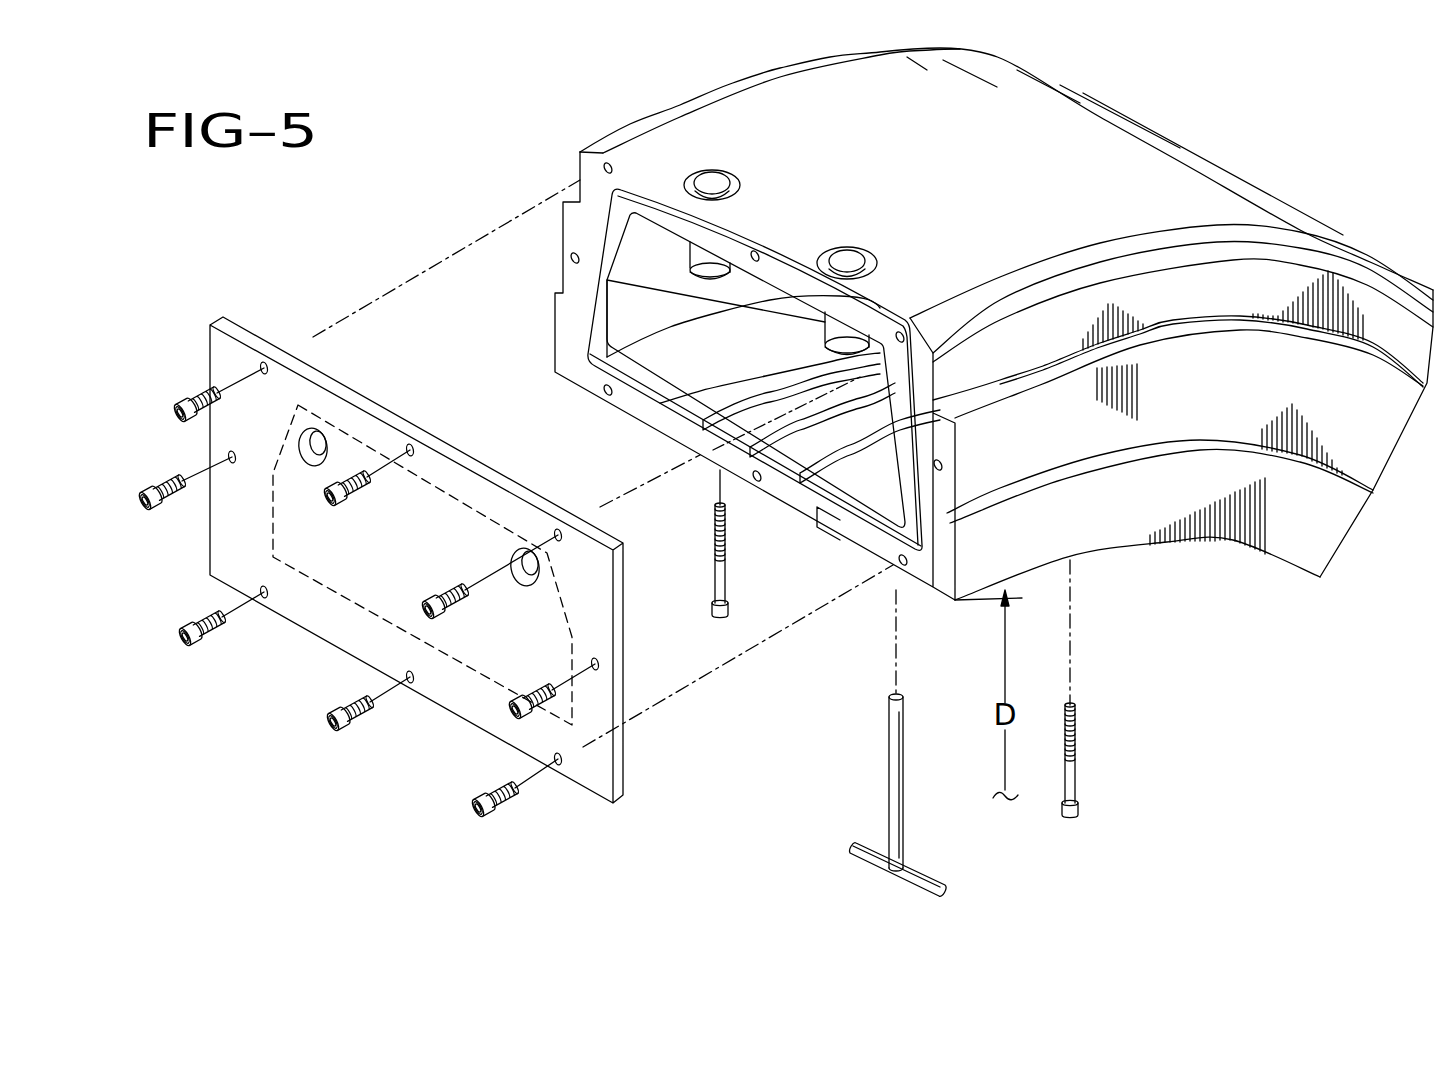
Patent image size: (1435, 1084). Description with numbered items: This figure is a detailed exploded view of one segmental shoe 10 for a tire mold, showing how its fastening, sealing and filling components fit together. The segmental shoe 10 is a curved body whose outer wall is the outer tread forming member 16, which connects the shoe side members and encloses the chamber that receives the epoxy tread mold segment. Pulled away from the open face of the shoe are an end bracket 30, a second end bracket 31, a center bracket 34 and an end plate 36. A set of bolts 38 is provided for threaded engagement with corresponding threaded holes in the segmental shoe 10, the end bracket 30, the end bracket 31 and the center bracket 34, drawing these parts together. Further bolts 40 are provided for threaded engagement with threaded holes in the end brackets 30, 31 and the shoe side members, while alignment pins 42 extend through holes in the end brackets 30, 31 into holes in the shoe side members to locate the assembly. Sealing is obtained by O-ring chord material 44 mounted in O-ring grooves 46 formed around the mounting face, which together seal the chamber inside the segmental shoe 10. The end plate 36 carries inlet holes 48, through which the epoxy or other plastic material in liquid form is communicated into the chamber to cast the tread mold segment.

The segmental shoe 10 is at (994, 352).
The outer tread forming member 16 is at (687, 132).
The end bracket 30 is at (754, 375).
The end bracket 31 is at (938, 575).
The center bracket 34 is at (712, 457).
The end plate 36 is at (444, 587).
The bolts 38 is at (167, 490).
The bolts 40 is at (720, 580).
The alignment pins 42 is at (896, 786).
The O-ring chord material 44 is at (808, 297).
The O-ring grooves 46 is at (738, 250).
The inlet holes 48 is at (315, 437).